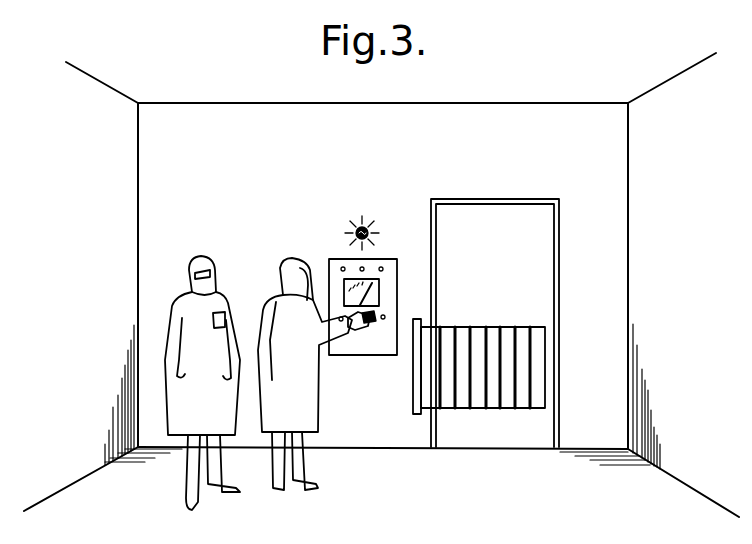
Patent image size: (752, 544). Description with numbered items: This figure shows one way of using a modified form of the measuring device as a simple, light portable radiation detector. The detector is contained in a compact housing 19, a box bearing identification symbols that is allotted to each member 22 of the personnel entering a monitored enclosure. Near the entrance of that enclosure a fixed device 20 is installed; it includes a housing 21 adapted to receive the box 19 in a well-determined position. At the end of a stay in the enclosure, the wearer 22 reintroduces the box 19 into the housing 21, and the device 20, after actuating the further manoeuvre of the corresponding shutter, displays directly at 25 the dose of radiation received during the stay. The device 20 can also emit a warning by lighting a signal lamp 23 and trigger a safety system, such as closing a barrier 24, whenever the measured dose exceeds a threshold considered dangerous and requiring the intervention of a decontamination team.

The compact housing 19 is at (372, 316).
The fixed device 20 is at (360, 343).
The housing 21 is at (385, 318).
The member of the personnel 22 is at (288, 320).
The signal lamp 23 is at (353, 226).
The barrier 24 is at (487, 327).
The display 25 is at (372, 283).